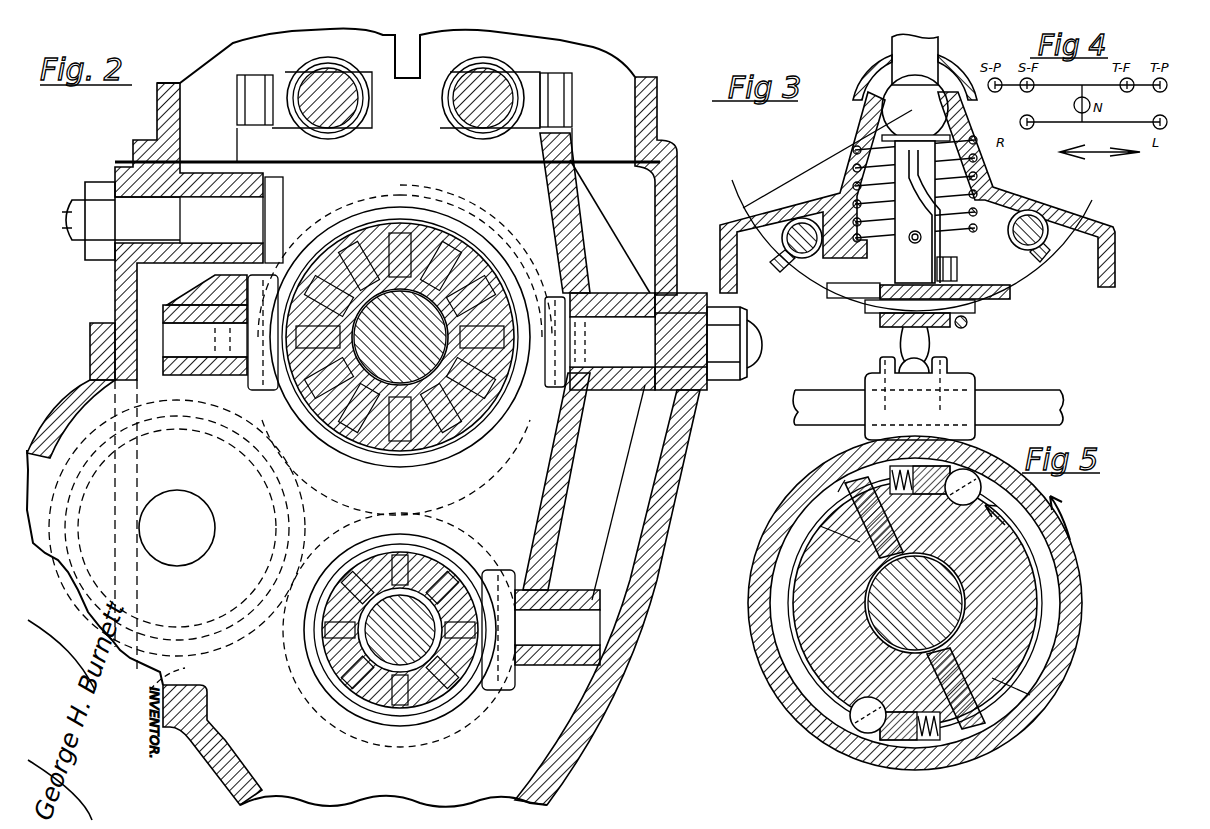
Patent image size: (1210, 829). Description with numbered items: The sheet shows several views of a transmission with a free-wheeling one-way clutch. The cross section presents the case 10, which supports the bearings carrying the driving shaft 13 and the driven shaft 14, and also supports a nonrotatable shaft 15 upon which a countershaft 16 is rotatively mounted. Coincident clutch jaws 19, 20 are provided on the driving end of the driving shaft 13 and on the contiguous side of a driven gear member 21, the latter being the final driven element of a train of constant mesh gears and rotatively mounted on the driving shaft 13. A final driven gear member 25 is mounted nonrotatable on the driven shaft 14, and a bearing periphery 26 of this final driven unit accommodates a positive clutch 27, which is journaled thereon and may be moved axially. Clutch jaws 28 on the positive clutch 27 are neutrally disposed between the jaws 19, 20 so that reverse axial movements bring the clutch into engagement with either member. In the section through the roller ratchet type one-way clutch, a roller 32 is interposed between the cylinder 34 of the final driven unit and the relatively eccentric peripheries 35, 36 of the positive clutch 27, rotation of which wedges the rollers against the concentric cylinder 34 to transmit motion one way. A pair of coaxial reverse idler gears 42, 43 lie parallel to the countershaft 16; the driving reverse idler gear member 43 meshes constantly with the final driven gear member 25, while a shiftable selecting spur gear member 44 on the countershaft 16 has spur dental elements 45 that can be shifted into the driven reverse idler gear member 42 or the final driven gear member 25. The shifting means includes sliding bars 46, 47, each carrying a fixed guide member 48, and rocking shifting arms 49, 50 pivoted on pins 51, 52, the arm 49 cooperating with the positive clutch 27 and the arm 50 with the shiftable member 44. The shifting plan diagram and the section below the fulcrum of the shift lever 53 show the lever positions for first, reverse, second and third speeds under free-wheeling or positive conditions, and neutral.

In FIG. 2, the case 10 is at (118, 280).
In FIG. 2, the driving shaft 13 is at (340, 205).
In FIG. 2, the driven shaft 14 is at (402, 310).
In FIG. 5, the driven shaft 14 is at (915, 600).
In FIG. 2, the nonrotatable shaft 15 is at (390, 650).
In FIG. 2, the countershaft 16 is at (395, 662).
In FIG. 2, the clutch jaws 19 is at (495, 200).
In FIG. 2, the clutch jaws 20 is at (505, 228).
In FIG. 2, the driven gear member 21 is at (365, 265).
In FIG. 2, the final driven gear member 25 is at (518, 500).
In FIG. 5, the final driven gear member 25 is at (820, 470).
In FIG. 5, the bearing periphery 26 is at (965, 603).
In FIG. 2, the positive clutch 27 is at (515, 275).
In FIG. 5, the positive clutch 27 is at (805, 520).
In FIG. 2, the clutch jaws 28 is at (400, 290).
In FIG. 5, the roller 32 is at (970, 480).
In FIG. 5, the cylinder 34 is at (1015, 480).
In FIG. 5, the eccentric periphery 35 is at (1010, 540).
In FIG. 5, the eccentric periphery 36 is at (855, 718).
In FIG. 2, the driven reverse idler gear member 42 is at (205, 668).
In FIG. 2, the driving reverse idler gear member 43 is at (222, 625).
In FIG. 2, the shiftable selecting spur gear member 44 is at (408, 705).
In FIG. 2, the spur dental elements 45 is at (498, 705).
In FIG. 2, the sliding bar 46 is at (345, 112).
In FIG. 2, the sliding bar 47 is at (372, 137).
In FIG. 3, the sliding bar 47 is at (1040, 400).
In FIG. 2, the guide member 48 is at (300, 70).
In FIG. 3, the guide member 48 is at (868, 388).
In FIG. 2, the rocking shifting arm 49 is at (230, 290).
In FIG. 2, the rocking shifting arm 50 is at (580, 258).
In FIG. 2, the pin 51 is at (162, 221).
In FIG. 2, the pin 52 is at (666, 343).
In FIG. 3, the shift lever 53 is at (910, 50).